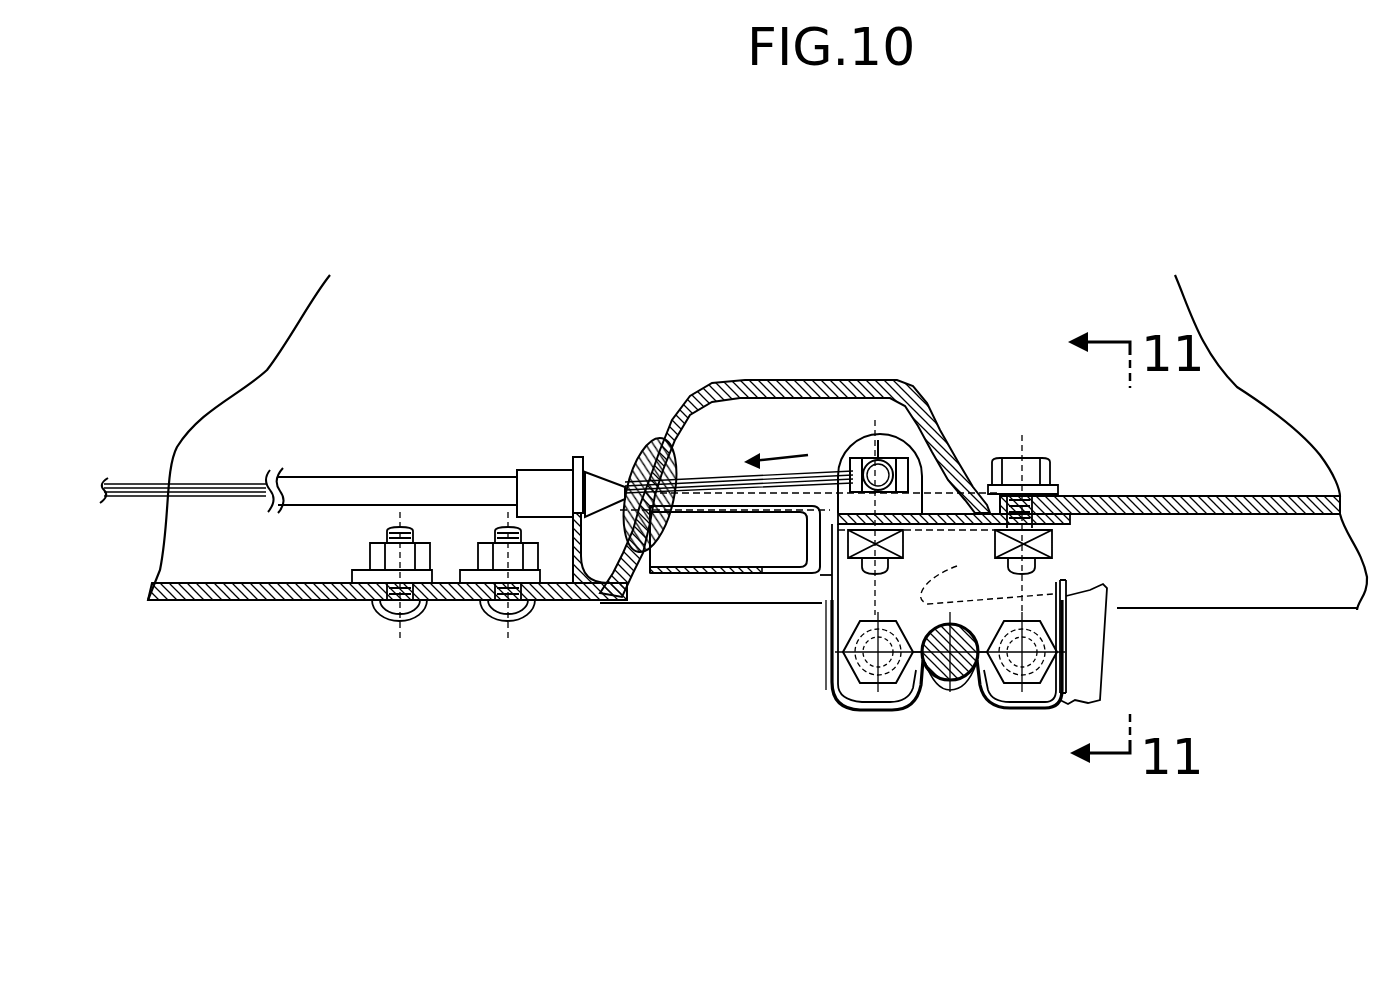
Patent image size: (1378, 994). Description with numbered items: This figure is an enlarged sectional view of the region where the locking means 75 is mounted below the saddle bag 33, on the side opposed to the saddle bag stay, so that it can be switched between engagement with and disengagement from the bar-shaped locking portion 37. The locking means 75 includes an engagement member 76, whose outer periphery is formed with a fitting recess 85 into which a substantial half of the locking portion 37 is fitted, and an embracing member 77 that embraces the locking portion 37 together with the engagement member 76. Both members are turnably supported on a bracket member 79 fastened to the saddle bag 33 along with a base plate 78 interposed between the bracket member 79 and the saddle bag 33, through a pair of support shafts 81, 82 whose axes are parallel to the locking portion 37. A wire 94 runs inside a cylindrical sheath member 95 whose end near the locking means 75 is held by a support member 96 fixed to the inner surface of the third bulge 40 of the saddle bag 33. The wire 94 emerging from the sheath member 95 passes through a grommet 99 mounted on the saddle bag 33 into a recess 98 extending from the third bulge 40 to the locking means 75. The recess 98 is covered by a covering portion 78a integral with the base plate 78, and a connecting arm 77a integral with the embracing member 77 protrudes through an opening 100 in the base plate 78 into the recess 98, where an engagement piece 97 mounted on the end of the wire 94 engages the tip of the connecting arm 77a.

The saddle bag 33 is at (1200, 495).
The locking portion 37 is at (937, 681).
The third bulge 40 is at (263, 600).
The locking means 75 is at (843, 706).
The engagement member 76 is at (1087, 687).
The embracing member 77 is at (882, 712).
The connecting arm 77a is at (853, 437).
The base plate 78 is at (1070, 518).
The covering portion 78a is at (700, 572).
The bracket member 79 is at (1060, 572).
The support shaft 81 is at (1047, 645).
The support shaft 82 is at (848, 660).
The fitting recess 85 is at (952, 680).
The wire 94 is at (155, 483).
The sheath member 95 is at (356, 487).
The support member 96 is at (598, 602).
The engagement piece 97 is at (893, 463).
The recess 98 is at (780, 398).
The grommet 99 is at (640, 457).
The opening 100 is at (767, 572).